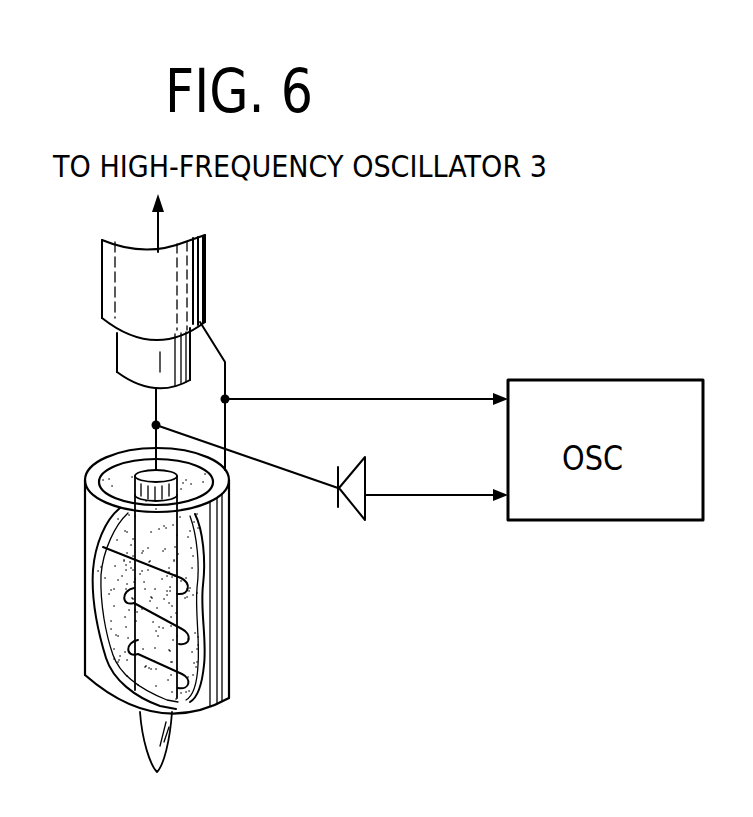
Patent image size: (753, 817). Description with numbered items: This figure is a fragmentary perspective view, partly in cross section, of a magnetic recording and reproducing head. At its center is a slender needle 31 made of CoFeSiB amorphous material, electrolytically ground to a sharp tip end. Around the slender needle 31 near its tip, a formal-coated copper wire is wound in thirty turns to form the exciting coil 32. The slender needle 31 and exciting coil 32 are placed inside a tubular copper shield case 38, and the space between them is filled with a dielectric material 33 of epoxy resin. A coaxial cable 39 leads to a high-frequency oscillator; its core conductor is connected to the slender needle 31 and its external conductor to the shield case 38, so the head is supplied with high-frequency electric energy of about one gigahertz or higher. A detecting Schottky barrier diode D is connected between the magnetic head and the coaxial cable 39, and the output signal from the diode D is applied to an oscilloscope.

The slender needle 31 is at (170, 546).
The exciting coil 32 is at (128, 598).
The dielectric material 33 is at (120, 639).
The shield case 38 is at (92, 512).
The coaxial cable 39 is at (170, 277).
The Schottky barrier diode D is at (366, 520).